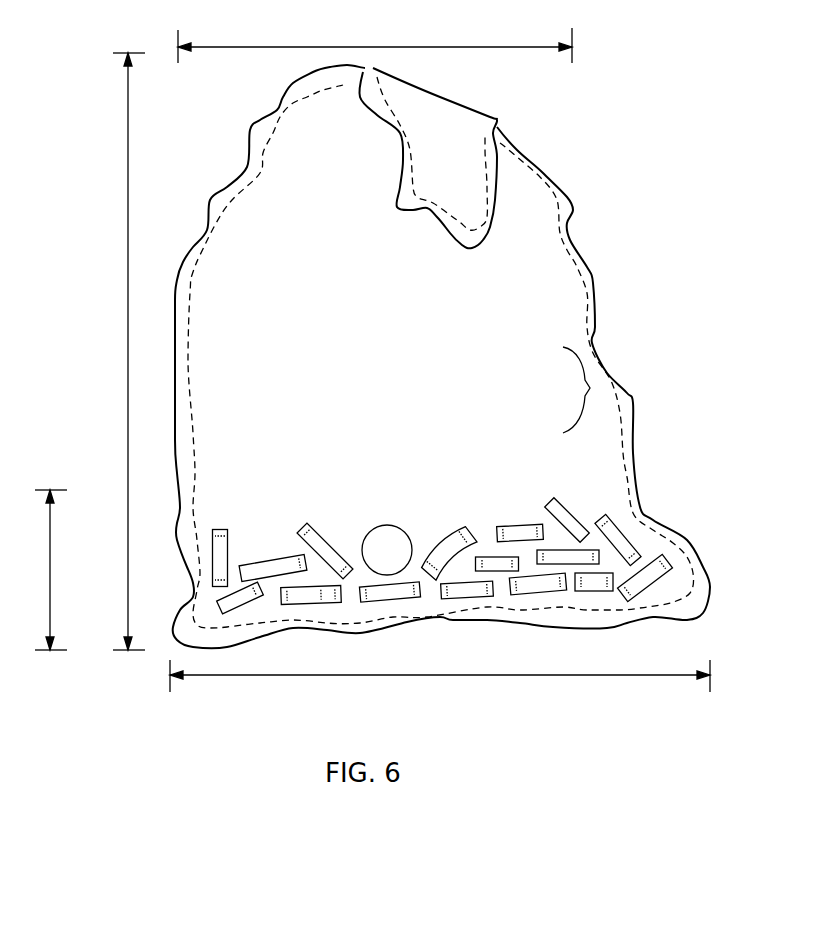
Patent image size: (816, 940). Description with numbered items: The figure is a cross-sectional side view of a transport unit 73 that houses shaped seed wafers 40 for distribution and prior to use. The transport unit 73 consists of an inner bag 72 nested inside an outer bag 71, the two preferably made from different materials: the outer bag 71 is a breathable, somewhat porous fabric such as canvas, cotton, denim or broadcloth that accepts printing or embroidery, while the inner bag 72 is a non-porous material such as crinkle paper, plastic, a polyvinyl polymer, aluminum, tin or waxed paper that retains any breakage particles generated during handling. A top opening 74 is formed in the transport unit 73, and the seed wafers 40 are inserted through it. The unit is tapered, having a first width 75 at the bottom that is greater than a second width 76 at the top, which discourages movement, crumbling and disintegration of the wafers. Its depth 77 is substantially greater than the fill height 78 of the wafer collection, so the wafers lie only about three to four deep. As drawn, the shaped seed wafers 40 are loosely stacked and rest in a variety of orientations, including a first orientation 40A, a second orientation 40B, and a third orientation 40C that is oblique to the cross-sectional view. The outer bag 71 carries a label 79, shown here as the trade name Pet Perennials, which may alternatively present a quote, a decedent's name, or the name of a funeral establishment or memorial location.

The transport unit 73 is at (443, 356).
The outer bag 71 is at (640, 397).
The inner bag 72 is at (224, 205).
The top opening 74 is at (409, 219).
The label 79 is at (591, 388).
The first width 75 is at (468, 678).
The second width 76 is at (393, 46).
The depth 77 is at (128, 310).
The fill height 78 is at (50, 558).
The shaped seed wafers 40 is at (443, 527).
The first orientation 40A is at (326, 527).
The second orientation 40B is at (407, 528).
The third orientation 40C is at (464, 537).